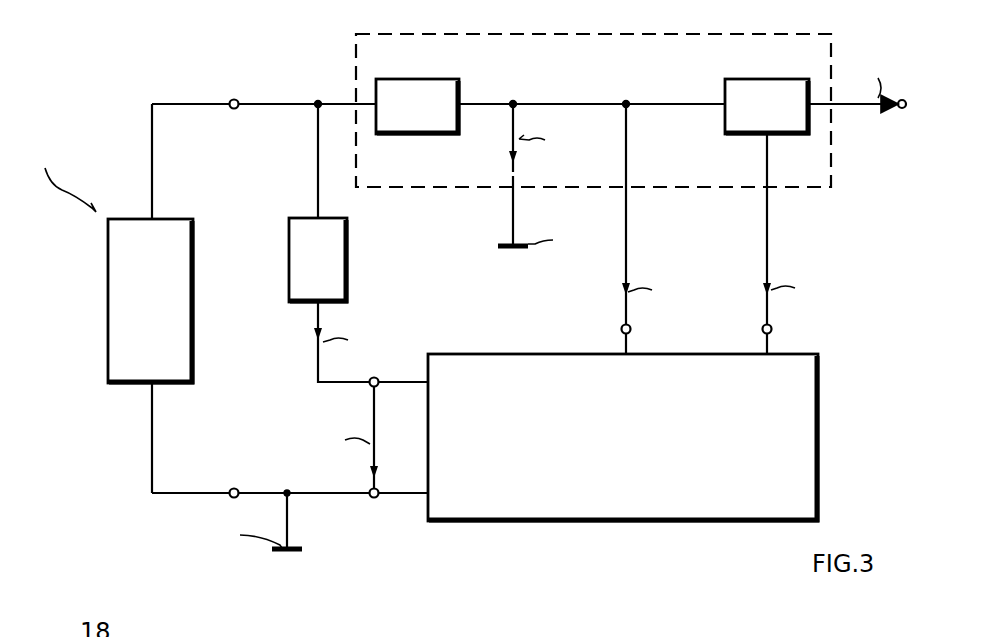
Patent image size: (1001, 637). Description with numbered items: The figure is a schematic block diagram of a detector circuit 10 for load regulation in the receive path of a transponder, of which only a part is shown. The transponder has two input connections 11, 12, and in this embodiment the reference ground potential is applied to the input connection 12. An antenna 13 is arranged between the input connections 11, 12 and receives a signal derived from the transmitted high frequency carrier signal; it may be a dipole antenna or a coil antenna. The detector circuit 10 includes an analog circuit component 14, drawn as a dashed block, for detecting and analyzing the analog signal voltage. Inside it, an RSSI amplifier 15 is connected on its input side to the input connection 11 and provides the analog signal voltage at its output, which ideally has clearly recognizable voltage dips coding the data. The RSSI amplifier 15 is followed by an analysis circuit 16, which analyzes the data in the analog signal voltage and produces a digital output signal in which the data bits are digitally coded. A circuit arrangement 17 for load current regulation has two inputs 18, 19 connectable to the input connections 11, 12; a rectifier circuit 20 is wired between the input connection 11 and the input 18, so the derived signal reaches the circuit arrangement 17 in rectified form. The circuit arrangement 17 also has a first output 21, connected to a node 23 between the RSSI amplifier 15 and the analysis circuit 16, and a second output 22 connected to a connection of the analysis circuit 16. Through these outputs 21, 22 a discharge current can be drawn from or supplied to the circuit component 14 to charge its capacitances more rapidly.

The detector circuit 10 is at (131, 69).
The input connection 11 is at (230, 96).
The input connection 12 is at (236, 486).
The antenna 13 is at (197, 365).
The analog circuit component 14 is at (352, 48).
The RSSI amplifier 15 is at (461, 77).
The analysis circuit 16 is at (756, 72).
The circuit arrangement 17 is at (822, 447).
The input 18 is at (383, 372).
The input 19 is at (378, 501).
The rectifier circuit 20 is at (349, 268).
The first output 21 is at (632, 330).
The second output 22 is at (771, 330).
The node 23 is at (632, 99).